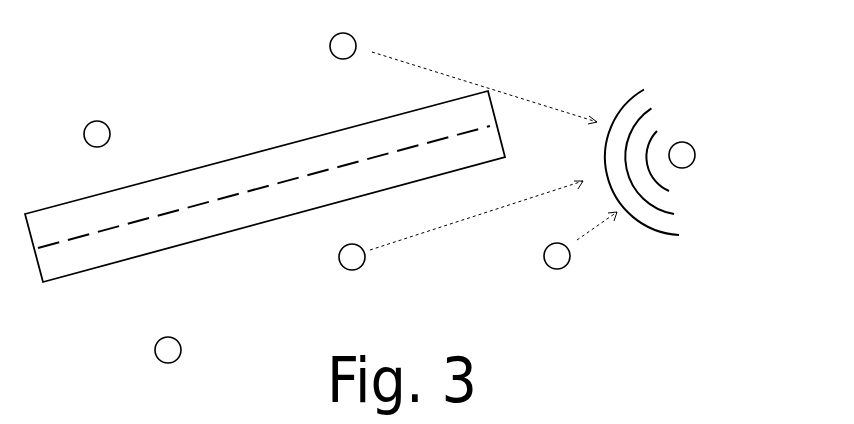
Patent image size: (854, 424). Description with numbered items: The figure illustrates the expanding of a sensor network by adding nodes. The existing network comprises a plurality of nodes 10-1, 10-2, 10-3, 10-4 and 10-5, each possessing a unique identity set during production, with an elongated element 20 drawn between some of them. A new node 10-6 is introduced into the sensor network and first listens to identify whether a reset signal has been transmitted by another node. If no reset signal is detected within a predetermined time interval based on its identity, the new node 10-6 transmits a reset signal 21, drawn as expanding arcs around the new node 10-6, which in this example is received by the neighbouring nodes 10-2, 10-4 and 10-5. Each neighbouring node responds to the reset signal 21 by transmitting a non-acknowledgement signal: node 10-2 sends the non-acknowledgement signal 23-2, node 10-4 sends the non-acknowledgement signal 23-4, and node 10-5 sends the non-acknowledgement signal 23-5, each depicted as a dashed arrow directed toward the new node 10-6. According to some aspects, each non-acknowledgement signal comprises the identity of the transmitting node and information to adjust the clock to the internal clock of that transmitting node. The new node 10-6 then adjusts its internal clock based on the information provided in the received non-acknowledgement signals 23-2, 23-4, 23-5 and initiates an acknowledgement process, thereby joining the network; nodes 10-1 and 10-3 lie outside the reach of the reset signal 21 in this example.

The node 10-1 is at (103, 117).
The node 10-2 is at (350, 29).
The node 10-3 is at (135, 352).
The node 10-4 is at (361, 244).
The node 10-5 is at (525, 244).
The new node 10-6 is at (698, 136).
The obstacle (wall) 20 is at (185, 171).
The reset signal 21 is at (659, 163).
The non-acknowledgement signal 23-2 is at (484, 81).
The non-acknowledgement signal 23-4 is at (476, 215).
The non-acknowledgement signal 23-5 is at (613, 235).